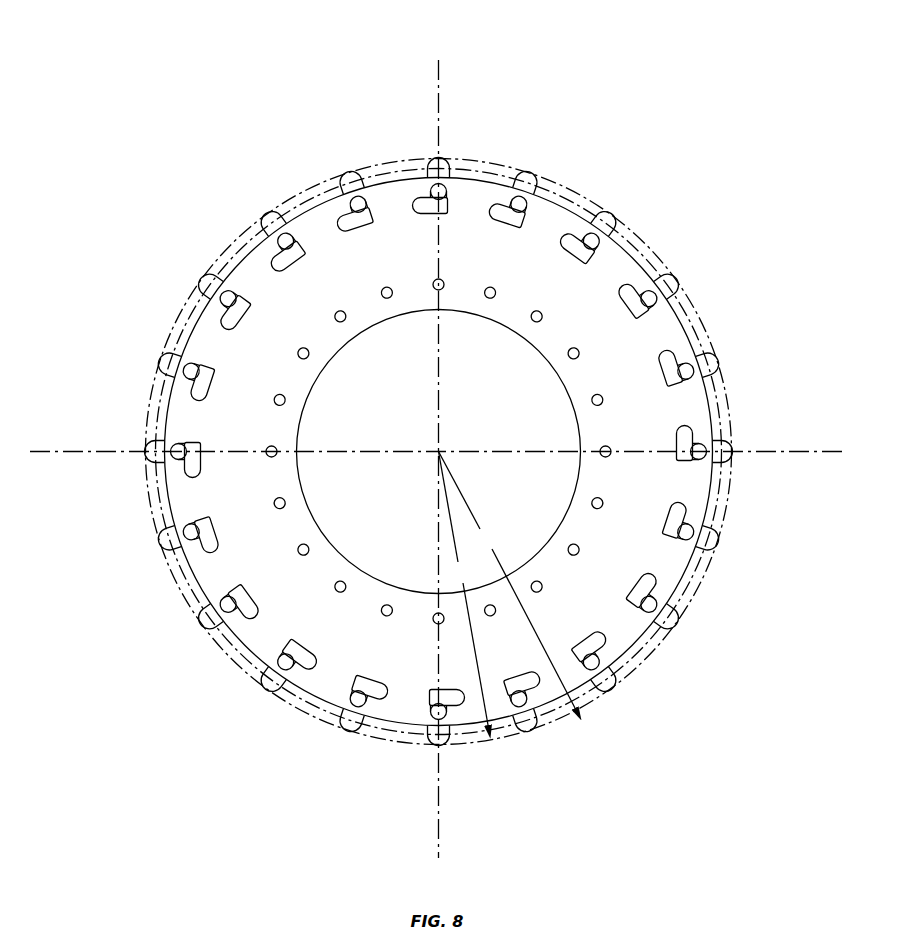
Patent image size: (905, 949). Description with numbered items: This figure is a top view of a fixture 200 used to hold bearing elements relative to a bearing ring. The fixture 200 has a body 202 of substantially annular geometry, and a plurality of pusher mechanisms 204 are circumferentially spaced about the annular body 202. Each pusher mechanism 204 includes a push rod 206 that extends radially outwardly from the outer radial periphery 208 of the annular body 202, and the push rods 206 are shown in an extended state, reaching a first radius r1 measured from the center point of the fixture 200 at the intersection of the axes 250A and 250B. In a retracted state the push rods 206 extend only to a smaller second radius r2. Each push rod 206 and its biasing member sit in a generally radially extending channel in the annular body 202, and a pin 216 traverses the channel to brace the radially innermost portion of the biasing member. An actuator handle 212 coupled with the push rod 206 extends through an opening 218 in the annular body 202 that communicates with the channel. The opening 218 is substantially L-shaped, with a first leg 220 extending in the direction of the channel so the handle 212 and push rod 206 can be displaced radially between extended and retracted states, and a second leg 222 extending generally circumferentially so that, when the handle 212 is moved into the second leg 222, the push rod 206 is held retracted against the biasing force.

The fixture 200 is at (706, 80).
The body 202 is at (635, 251).
The pusher mechanism 204 is at (542, 204).
The push rod 206 is at (216, 277).
The outer radial periphery 208 is at (684, 316).
The actuator handle 212 is at (367, 191).
The pin 216 is at (337, 311).
The opening 218 is at (271, 699).
The first leg 220 is at (349, 685).
The second leg 222 is at (374, 703).
The axis 250A is at (441, 72).
The axis 250B is at (498, 447).
The first radius r1 is at (507, 580).
The second radius r2 is at (464, 589).